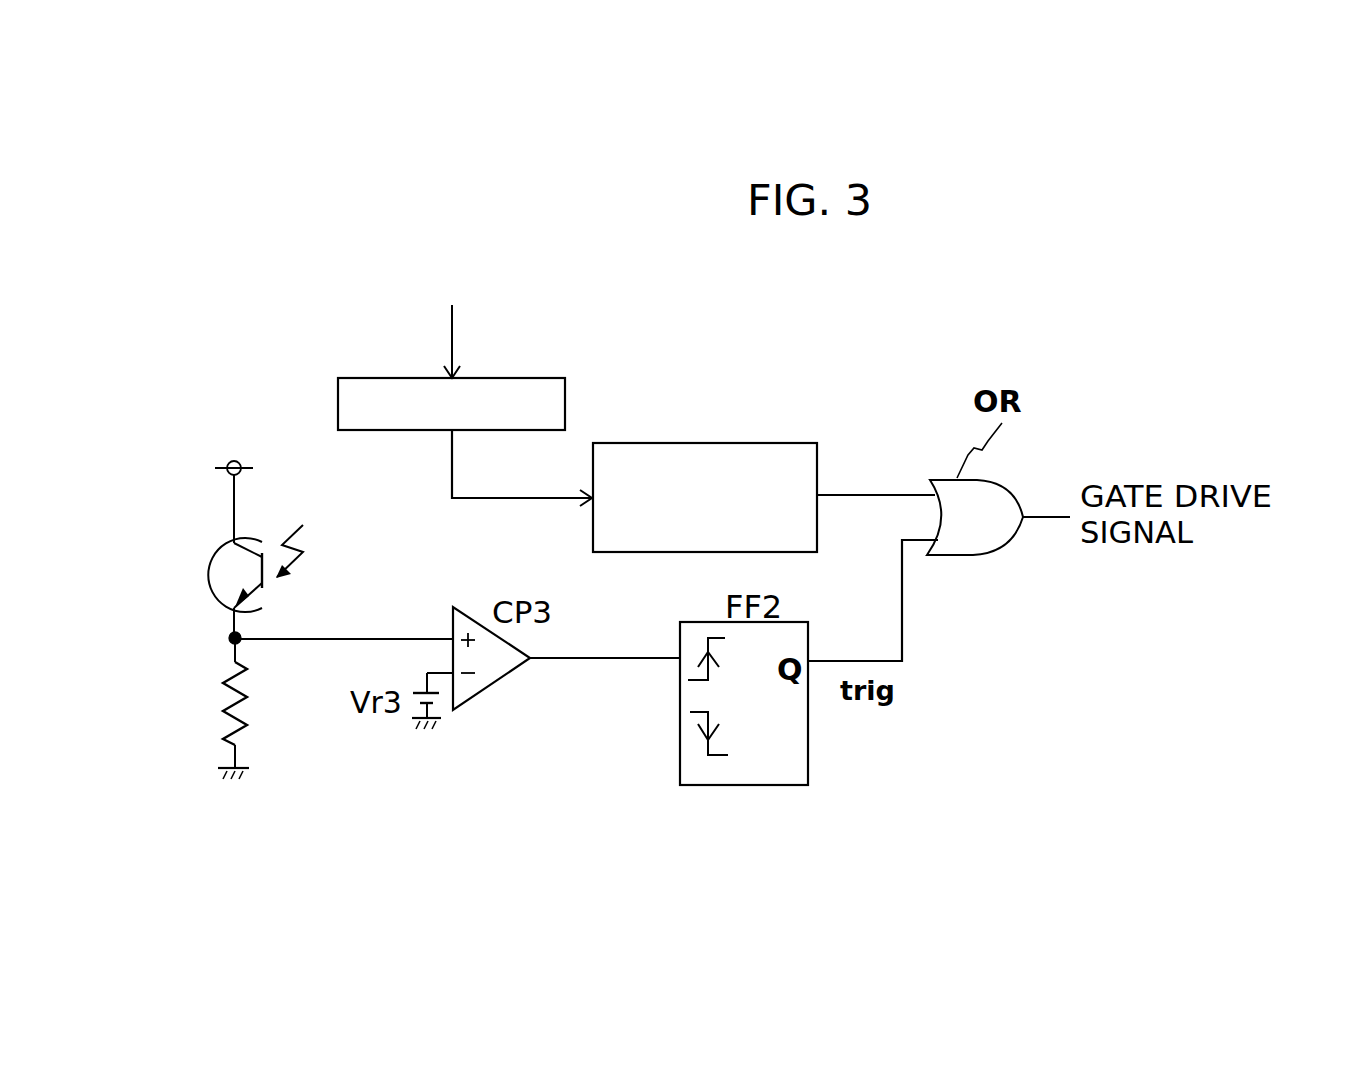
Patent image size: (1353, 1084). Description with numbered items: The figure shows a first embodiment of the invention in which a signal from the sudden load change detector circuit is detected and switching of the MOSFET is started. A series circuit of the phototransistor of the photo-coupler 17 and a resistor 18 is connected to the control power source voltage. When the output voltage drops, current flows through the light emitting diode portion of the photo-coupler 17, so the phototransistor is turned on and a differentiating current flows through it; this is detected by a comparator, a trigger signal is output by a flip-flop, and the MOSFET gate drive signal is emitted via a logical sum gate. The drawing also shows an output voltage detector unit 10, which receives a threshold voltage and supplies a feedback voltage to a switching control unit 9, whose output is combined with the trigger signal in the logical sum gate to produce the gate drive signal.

The switching control unit 9 is at (764, 449).
The output voltage detector unit 10 is at (465, 386).
The photo-coupler 17 is at (221, 551).
The resistor 18 is at (200, 712).